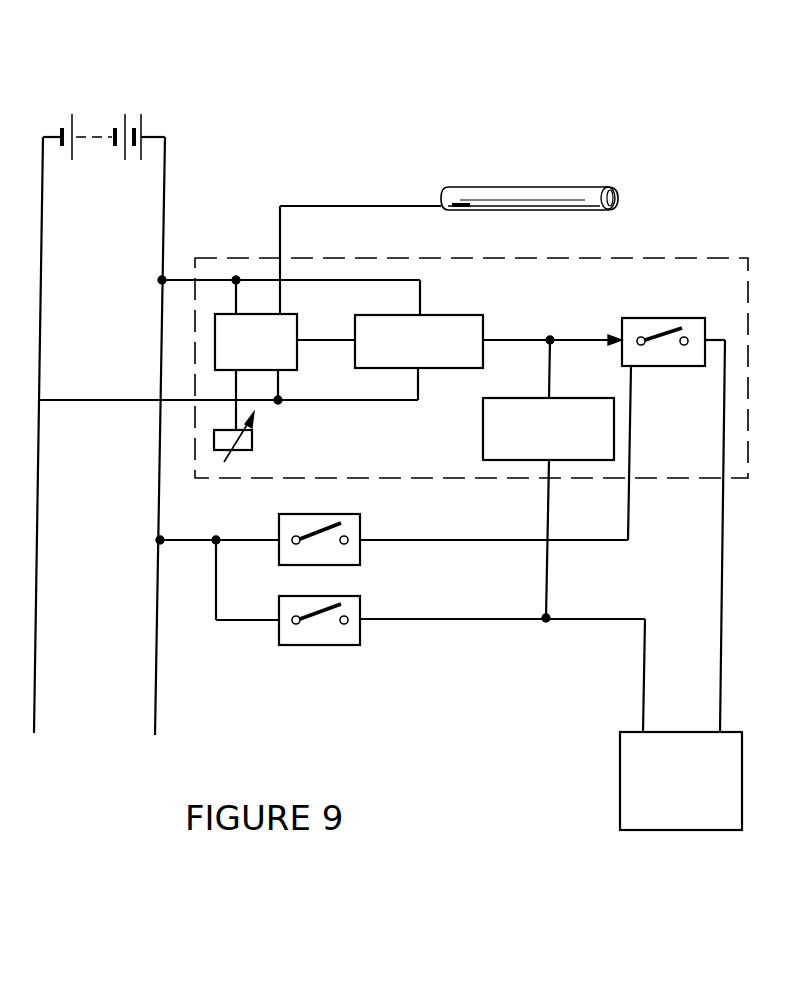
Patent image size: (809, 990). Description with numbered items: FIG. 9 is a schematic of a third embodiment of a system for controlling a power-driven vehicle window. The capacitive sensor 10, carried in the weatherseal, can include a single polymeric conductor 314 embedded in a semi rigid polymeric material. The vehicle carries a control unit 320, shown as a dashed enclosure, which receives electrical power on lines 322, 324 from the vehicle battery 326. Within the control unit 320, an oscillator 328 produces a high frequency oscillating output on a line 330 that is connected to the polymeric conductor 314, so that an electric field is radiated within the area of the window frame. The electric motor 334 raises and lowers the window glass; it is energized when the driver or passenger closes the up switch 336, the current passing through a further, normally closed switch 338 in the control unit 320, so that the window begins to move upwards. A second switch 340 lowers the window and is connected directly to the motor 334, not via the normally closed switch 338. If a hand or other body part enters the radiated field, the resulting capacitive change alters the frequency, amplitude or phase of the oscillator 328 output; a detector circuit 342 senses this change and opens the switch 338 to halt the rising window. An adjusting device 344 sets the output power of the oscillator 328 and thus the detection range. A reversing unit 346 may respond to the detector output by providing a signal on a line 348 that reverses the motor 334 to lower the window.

The capacitive sensor 10 is at (550, 186).
The polymeric conductor 314 is at (470, 215).
The control unit 320 is at (686, 256).
The line 322 is at (186, 277).
The line 324 is at (116, 402).
The battery 326 is at (106, 110).
The oscillator 328 is at (298, 320).
The line 330 is at (283, 247).
The electric motor 334 is at (701, 832).
The up switch 336 is at (361, 556).
The switch 338 is at (631, 316).
The second switch 340 is at (352, 648).
The detector circuit 342 is at (484, 322).
The adjusting device 344 is at (253, 442).
The reversing unit 346 is at (483, 444).
The line 348 is at (549, 578).